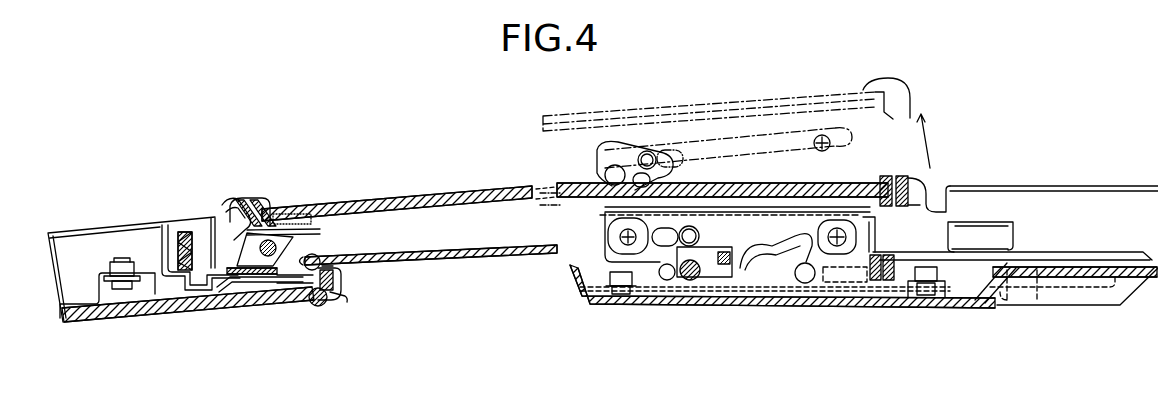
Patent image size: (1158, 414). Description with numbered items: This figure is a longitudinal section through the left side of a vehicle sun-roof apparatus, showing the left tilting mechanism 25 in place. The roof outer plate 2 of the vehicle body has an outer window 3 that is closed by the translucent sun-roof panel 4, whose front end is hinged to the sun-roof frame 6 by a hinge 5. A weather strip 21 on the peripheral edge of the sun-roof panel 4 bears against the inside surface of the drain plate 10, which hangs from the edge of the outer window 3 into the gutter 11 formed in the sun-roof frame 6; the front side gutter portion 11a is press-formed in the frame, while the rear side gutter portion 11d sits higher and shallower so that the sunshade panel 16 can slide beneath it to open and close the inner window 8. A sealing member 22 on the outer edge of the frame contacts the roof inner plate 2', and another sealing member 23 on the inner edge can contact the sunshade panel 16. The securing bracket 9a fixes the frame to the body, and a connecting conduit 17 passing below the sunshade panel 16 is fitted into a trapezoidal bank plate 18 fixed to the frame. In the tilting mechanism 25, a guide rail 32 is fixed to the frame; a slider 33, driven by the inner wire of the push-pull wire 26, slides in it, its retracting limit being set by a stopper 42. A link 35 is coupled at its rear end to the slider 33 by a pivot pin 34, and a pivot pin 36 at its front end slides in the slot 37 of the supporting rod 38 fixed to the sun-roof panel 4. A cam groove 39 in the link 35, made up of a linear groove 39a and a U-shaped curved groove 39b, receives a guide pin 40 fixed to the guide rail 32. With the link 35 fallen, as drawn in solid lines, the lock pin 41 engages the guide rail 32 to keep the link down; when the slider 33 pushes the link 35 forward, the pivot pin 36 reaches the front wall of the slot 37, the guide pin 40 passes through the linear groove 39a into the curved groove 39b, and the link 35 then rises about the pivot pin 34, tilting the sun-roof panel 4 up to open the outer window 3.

The roof outer plate 2 is at (131, 259).
The roof inner plate 2' is at (107, 293).
The outer window 3 is at (222, 214).
The sun-roof panel 4 is at (389, 200).
The hinge 5 is at (287, 244).
The sun-roof frame 6 is at (281, 280).
The inner window 8 is at (338, 294).
The securing bracket 9a is at (153, 279).
The drain plate 10 is at (213, 245).
The gutter 11 is at (197, 301).
The front side gutter portion 11a is at (216, 296).
The rear side gutter portion 11d is at (1000, 232).
The sunshade panel 16 is at (450, 254).
The connecting conduit 17 is at (1006, 287).
The bank plate 18 is at (1037, 287).
The weather strip 21 is at (258, 199).
The sealing member 22 is at (175, 226).
The sealing member 23 is at (330, 277).
The tilting mechanism 25 is at (749, 292).
The push-pull wire 26 is at (941, 283).
The guide rail 32 is at (768, 262).
The slider 33 is at (823, 268).
The pivot pin 34 is at (805, 284).
The link 35 is at (631, 158).
The pivot pin 36 is at (700, 229).
The slot 37 is at (674, 232).
The supporting rod 38 is at (840, 200).
The cam groove 39 is at (812, 143).
The linear groove 39a is at (755, 222).
The curved groove 39b is at (800, 214).
The guide pin 40 is at (700, 262).
The lock pin 41 is at (694, 280).
The stopper 42 is at (876, 282).